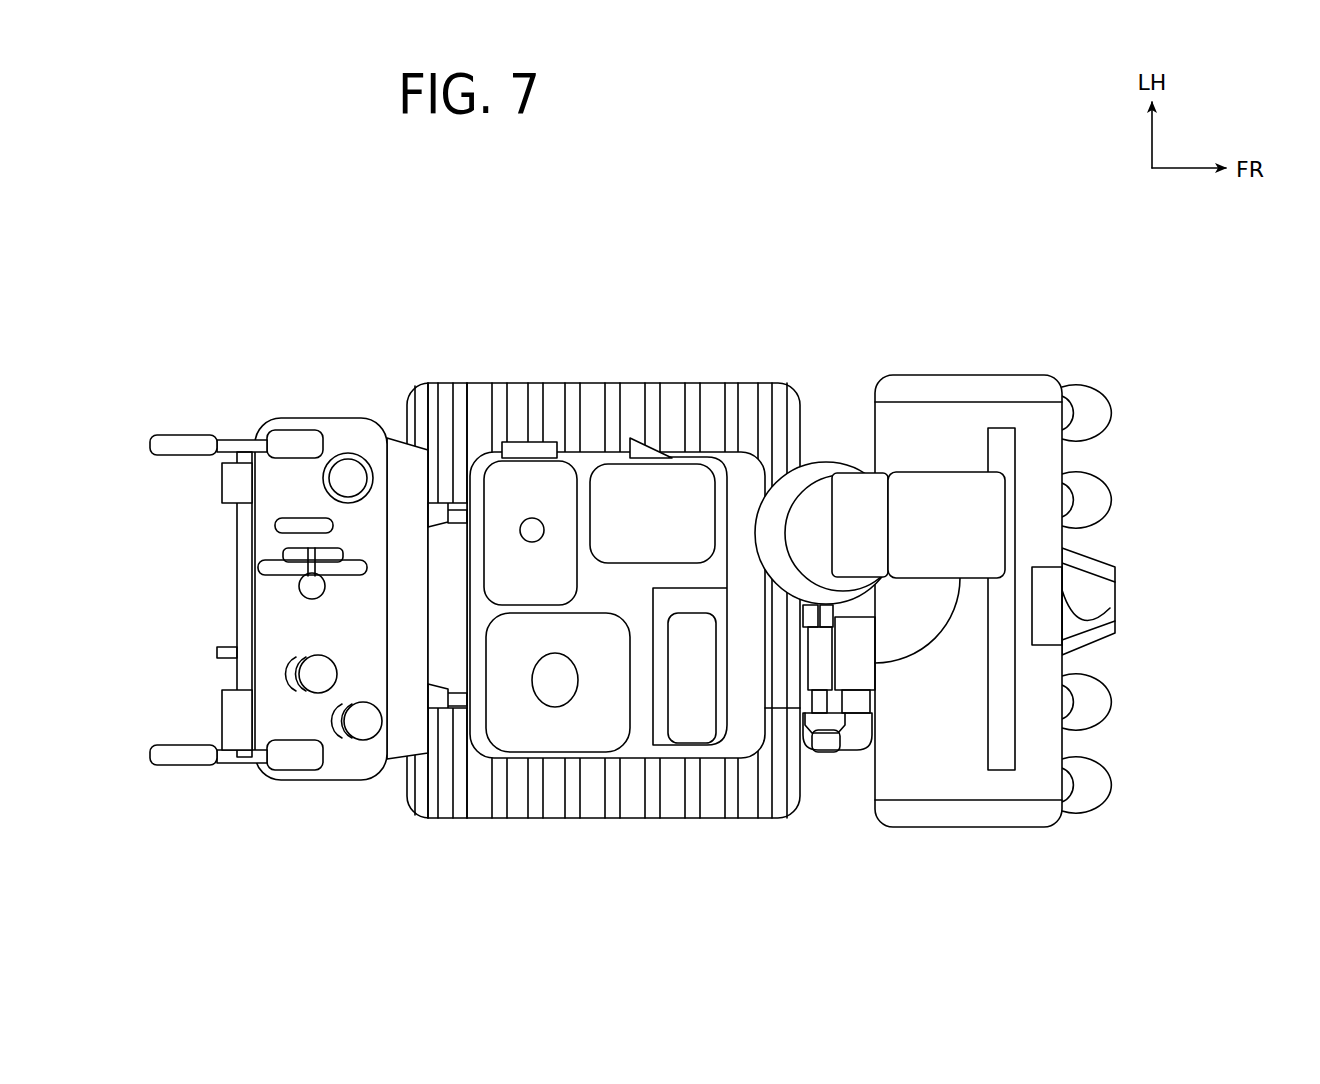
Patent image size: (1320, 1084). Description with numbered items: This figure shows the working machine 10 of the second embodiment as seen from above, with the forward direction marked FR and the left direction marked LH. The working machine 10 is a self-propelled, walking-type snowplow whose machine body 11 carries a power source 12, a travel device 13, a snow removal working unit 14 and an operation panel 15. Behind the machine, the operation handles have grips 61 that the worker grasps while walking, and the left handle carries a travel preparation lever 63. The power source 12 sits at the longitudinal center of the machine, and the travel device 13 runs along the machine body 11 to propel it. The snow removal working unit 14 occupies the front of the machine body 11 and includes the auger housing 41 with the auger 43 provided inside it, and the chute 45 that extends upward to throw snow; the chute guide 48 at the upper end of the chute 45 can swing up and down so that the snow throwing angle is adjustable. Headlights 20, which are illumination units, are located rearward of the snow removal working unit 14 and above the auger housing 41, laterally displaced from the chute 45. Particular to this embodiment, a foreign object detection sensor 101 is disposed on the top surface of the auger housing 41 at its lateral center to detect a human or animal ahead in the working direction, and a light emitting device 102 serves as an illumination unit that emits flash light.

The working machine 10 is at (684, 136).
The machine body 11 is at (455, 503).
The power source 12 is at (591, 451).
The travel device 13 is at (497, 372).
The snow removal working unit 14 is at (977, 534).
The operation panel 15 is at (308, 393).
The headlights 20 is at (617, 698).
The auger housing 41 is at (963, 373).
The auger 43 is at (1094, 389).
The chute 45 is at (856, 458).
The chute guide 48 is at (948, 522).
The grip 61 is at (176, 434).
The travel preparation lever 63 is at (233, 440).
The foreign object detection sensor 101 is at (1076, 587).
The light emitting device 102 is at (690, 706).